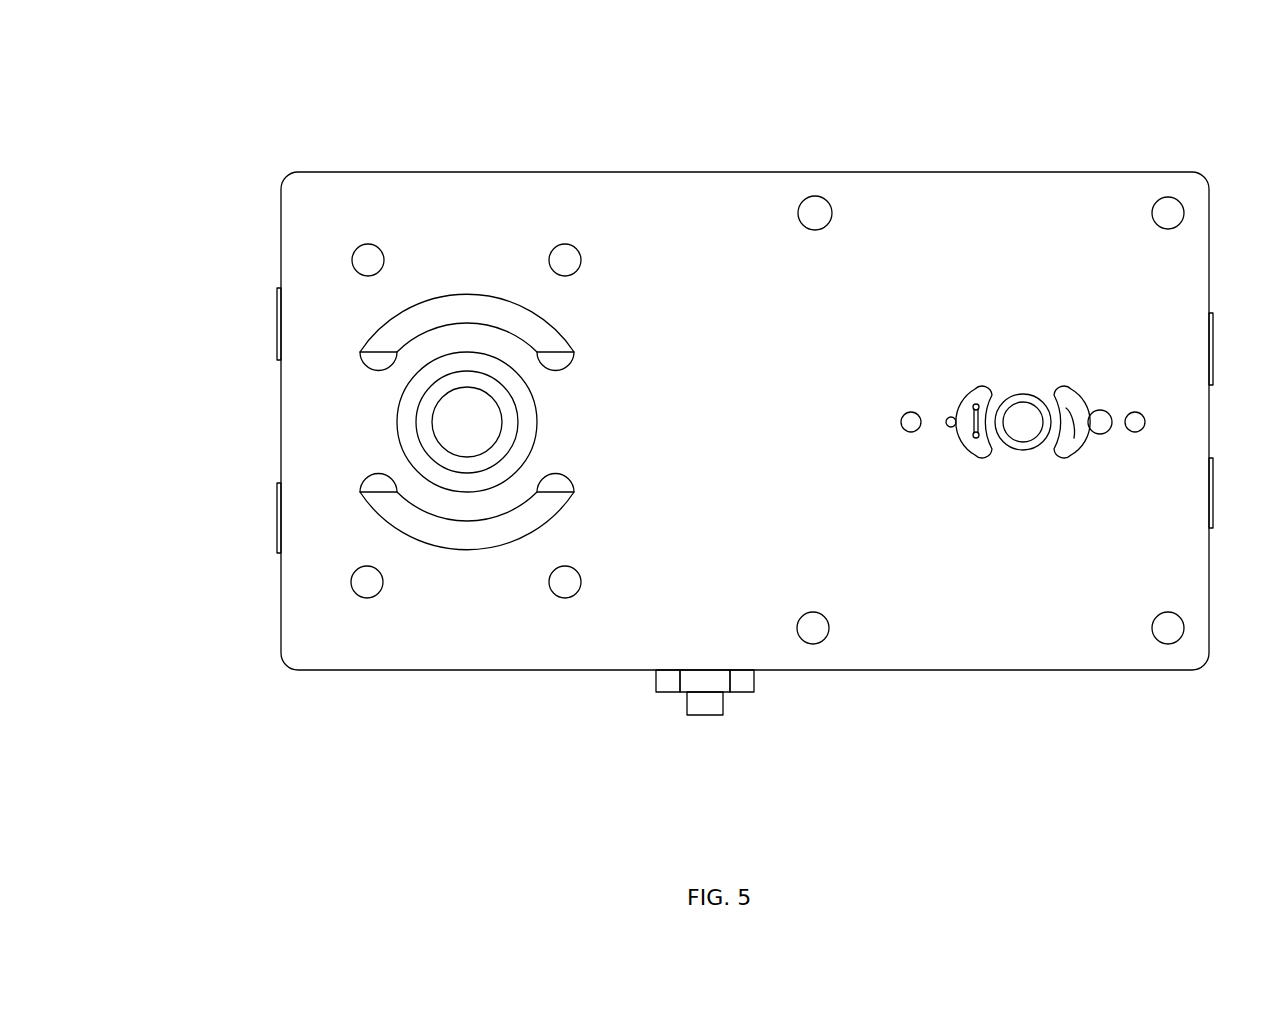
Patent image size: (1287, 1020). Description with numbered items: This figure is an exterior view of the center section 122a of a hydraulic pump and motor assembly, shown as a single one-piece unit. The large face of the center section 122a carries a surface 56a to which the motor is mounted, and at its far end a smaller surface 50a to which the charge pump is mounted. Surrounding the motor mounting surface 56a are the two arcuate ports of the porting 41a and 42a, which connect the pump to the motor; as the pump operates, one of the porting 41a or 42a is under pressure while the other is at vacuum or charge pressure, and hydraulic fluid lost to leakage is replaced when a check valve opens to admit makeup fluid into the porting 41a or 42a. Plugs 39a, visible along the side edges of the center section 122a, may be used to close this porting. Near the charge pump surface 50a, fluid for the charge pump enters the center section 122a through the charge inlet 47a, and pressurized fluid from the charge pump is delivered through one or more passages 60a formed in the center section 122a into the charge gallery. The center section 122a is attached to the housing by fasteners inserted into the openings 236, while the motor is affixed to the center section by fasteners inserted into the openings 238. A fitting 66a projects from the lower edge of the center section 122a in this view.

The center section 122a is at (240, 103).
The plugs 39a is at (277, 322).
The porting 41a is at (527, 330).
The porting 42a is at (527, 517).
The surface 56a is at (568, 417).
The openings 236 is at (813, 212).
The openings 238 is at (368, 582).
The surface 50a is at (1020, 475).
The passages 60a is at (966, 427).
The charge inlet 47a is at (1082, 436).
The connector 66a is at (672, 693).